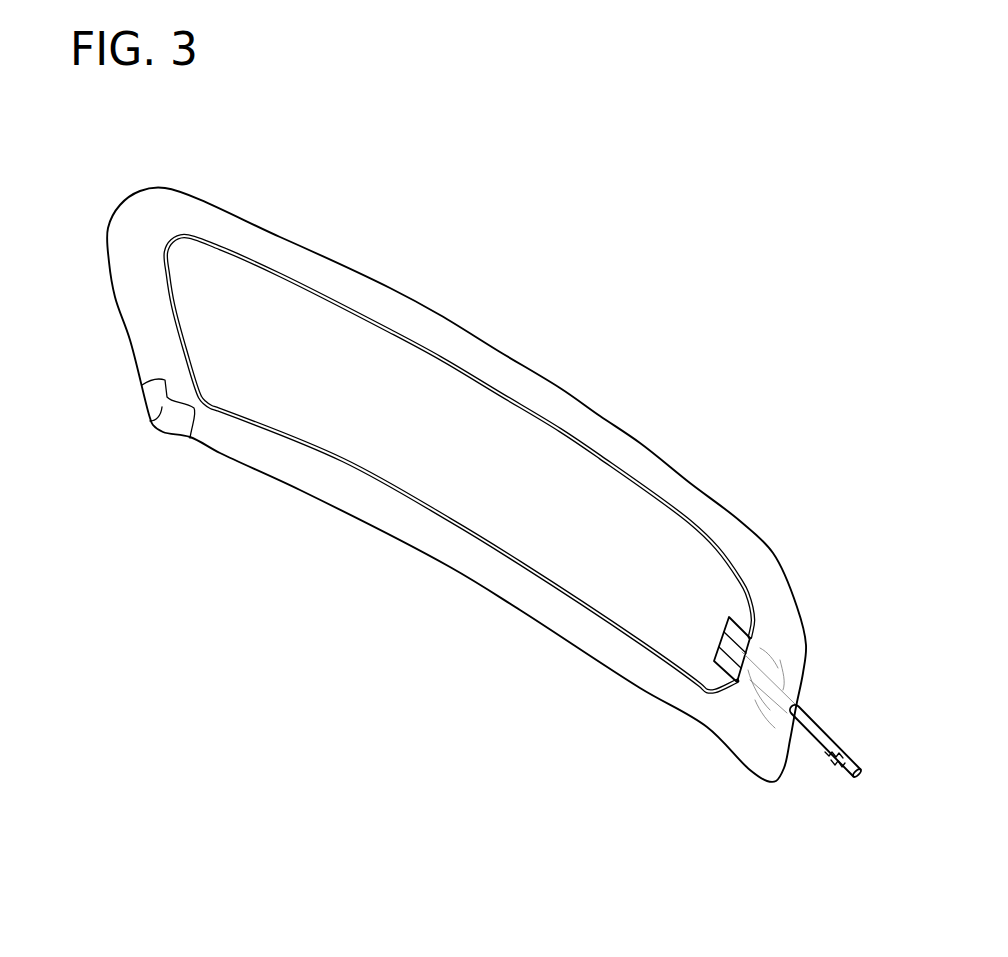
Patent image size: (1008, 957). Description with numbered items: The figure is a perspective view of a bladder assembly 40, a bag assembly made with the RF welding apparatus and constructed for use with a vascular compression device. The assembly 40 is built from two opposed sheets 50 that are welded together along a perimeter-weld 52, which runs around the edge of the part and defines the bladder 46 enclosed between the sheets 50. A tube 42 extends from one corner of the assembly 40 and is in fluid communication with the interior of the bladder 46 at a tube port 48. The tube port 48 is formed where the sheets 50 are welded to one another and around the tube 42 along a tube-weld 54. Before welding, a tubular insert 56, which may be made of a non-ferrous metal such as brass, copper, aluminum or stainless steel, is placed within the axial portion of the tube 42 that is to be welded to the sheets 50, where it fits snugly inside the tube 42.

The bladder assembly 40 is at (668, 317).
The tube 42 is at (837, 733).
The bladder 46 is at (389, 464).
The tube port 48 is at (802, 617).
The sheets 50 is at (477, 362).
The perimeter-weld 52 is at (674, 512).
The tube-weld 54 is at (753, 640).
The tubular insert 56 is at (832, 766).